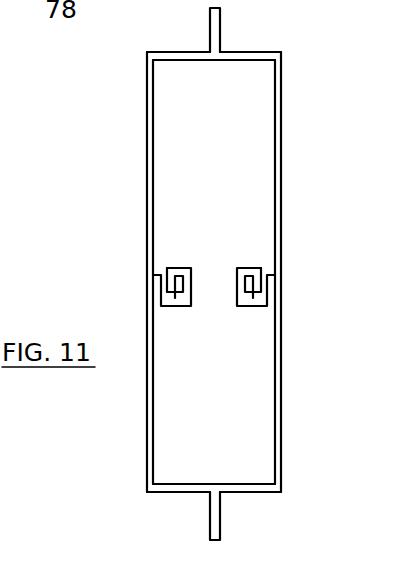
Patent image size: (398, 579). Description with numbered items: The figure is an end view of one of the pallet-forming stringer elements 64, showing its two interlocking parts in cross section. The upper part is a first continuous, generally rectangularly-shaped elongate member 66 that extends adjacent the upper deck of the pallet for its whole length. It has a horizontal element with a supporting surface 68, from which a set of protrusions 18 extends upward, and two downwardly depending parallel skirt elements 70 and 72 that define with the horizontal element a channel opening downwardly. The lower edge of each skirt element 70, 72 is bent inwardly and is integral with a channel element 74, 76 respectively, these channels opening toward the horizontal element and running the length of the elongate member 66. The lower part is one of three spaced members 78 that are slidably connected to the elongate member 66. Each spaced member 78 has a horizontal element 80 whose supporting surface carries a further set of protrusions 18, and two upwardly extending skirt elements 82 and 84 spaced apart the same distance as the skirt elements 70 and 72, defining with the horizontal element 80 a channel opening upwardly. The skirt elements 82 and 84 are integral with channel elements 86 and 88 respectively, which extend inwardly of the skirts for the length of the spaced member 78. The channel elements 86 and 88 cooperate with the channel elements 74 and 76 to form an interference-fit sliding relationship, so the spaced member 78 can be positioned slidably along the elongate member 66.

The set of protrusions 18 is at (220, 18).
The stringer element 64 is at (92, 252).
The continuous generally rectangularly-shaped elongate member 66 is at (293, 92).
The supporting surface 68 is at (252, 52).
The skirt element 70 is at (147, 105).
The skirt element 72 is at (282, 127).
The channel element 74 is at (172, 306).
The channel element 76 is at (254, 306).
The spaced member 78 is at (293, 365).
The horizontal element 80 is at (237, 493).
The skirt element 82 is at (145, 410).
The skirt element 84 is at (282, 398).
The channel element 86 is at (192, 280).
The channel element 88 is at (247, 270).